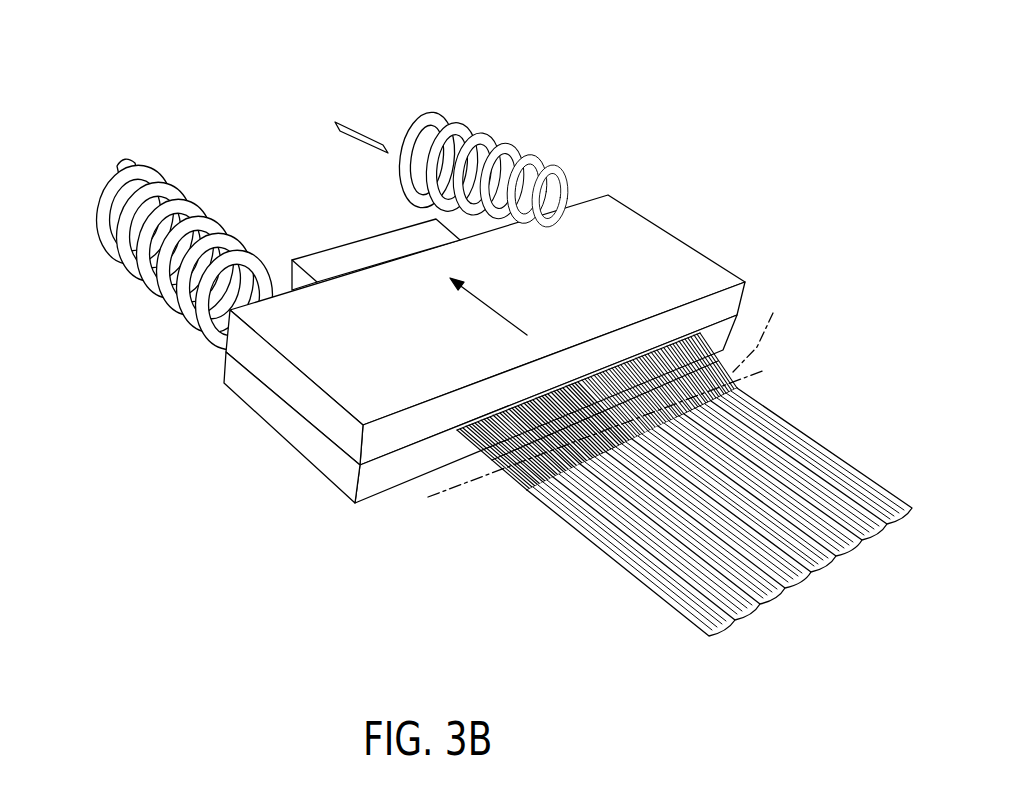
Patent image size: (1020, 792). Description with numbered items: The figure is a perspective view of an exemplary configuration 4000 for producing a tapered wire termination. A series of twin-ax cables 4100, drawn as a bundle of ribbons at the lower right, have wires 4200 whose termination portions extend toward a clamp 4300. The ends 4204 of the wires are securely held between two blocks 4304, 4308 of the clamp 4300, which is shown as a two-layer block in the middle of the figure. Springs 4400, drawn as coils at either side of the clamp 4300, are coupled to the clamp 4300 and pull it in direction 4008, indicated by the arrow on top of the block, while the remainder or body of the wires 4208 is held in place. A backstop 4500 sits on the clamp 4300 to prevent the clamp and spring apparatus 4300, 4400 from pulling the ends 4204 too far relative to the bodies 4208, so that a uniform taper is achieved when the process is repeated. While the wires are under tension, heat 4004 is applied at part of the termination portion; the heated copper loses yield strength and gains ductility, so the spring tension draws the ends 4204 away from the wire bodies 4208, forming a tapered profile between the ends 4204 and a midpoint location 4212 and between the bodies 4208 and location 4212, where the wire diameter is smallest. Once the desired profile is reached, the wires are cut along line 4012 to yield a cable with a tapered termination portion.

The configuration 4000 is at (99, 101).
The springs 4400 is at (172, 300).
The backstop 4500 is at (355, 248).
The clamp 4300 is at (468, 349).
The block 4308 is at (270, 370).
The block 4304 is at (297, 437).
The direction 4008 is at (492, 310).
The line 4012 is at (762, 326).
The heat 4004 is at (732, 378).
The wires 4200 is at (658, 458).
The ends 4204 is at (460, 430).
The midpoint location 4212 is at (497, 470).
The wire bodies 4208 is at (533, 483).
The twin-ax cables 4100 is at (613, 553).